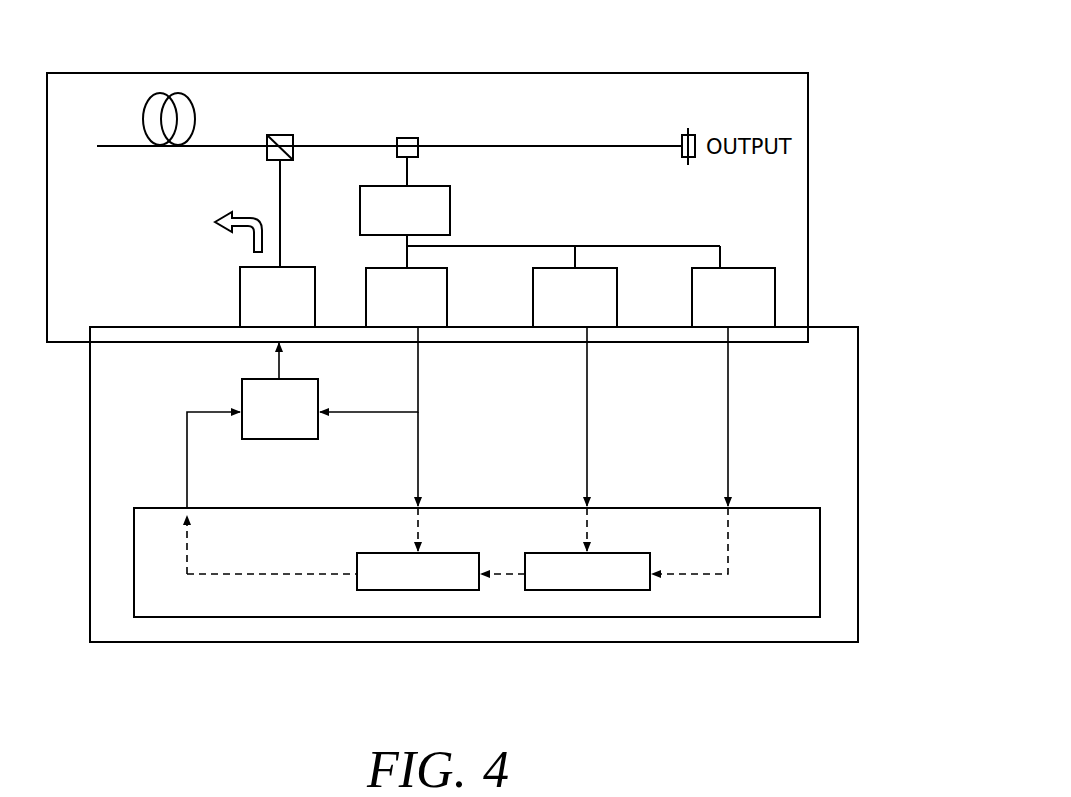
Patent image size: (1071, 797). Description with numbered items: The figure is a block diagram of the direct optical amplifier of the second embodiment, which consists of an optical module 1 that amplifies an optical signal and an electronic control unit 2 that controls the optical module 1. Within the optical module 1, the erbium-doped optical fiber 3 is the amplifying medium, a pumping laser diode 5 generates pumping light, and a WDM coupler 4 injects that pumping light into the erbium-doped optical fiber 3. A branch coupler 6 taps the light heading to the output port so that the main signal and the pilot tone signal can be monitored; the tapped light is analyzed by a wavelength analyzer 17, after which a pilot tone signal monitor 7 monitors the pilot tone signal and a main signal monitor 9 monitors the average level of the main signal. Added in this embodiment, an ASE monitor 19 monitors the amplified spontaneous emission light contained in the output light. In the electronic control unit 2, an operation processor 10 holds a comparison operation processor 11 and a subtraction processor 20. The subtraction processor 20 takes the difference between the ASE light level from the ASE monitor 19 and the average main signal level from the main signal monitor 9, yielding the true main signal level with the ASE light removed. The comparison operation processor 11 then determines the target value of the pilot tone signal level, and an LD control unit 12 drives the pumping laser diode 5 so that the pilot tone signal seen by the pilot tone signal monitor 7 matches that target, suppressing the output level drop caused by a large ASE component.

The optical module 1 is at (707, 73).
The electronic control unit 2 is at (190, 643).
The erbium-doped optical fiber 3 is at (183, 148).
The WDM coupler 4 is at (274, 135).
The pumping laser diode 5 is at (304, 266).
The branch coupler 6 is at (407, 138).
The pilot tone signal monitor 7 is at (447, 283).
The main signal monitor 9 is at (617, 283).
The operation processor 10 is at (215, 508).
The comparison operation processor 11 is at (450, 553).
The LD control unit 12 is at (318, 422).
The wavelength analyzer 17 is at (425, 186).
The ASE monitor 19 is at (757, 268).
The subtraction processor 20 is at (610, 553).